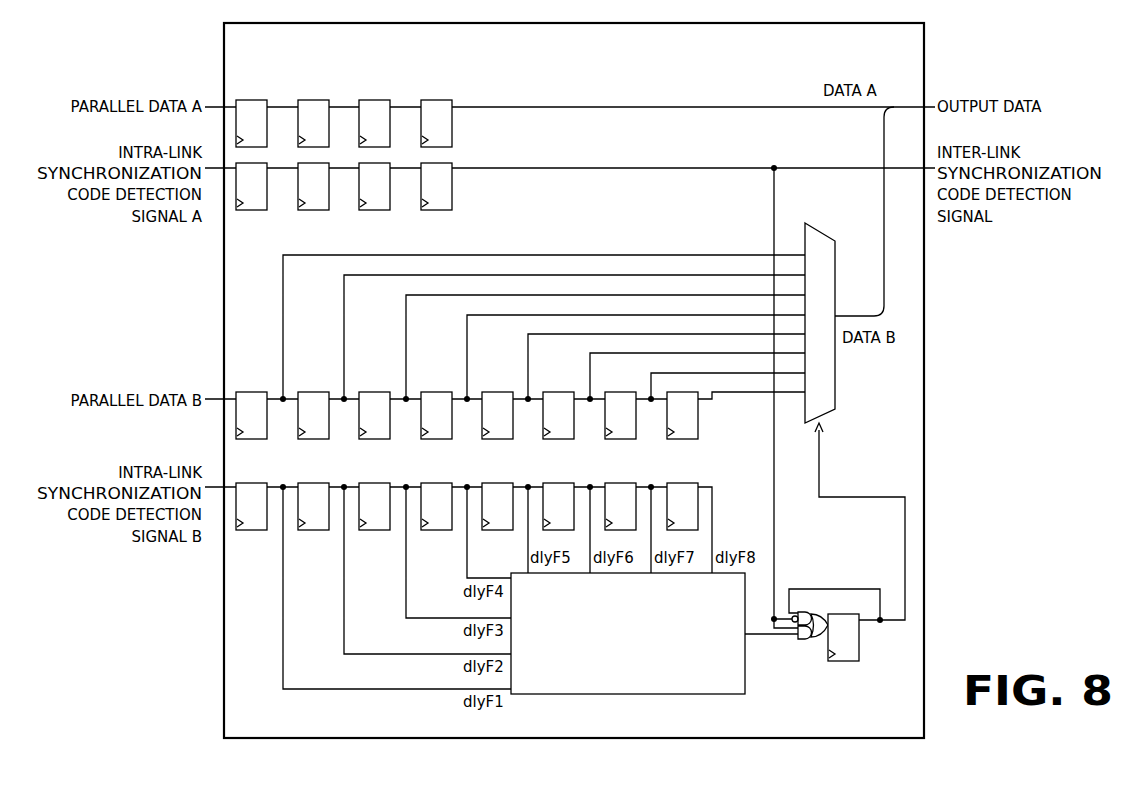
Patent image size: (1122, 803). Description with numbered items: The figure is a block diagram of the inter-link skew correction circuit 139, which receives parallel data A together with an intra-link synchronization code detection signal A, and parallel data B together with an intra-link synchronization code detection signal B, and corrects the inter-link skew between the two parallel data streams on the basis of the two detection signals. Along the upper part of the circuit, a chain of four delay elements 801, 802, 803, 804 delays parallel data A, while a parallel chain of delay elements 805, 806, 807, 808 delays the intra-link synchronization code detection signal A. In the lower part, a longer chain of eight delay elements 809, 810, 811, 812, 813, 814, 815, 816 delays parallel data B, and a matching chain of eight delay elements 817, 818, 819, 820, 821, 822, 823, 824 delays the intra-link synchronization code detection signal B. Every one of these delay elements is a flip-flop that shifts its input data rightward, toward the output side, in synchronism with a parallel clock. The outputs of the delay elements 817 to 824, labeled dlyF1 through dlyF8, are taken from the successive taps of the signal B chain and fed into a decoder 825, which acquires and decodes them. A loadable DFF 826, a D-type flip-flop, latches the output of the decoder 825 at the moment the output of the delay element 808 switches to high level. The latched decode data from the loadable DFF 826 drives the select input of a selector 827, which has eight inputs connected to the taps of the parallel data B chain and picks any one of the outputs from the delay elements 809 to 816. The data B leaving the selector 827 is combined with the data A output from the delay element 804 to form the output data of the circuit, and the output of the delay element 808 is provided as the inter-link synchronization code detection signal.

The inter-link skew correction circuit 139 is at (924, 445).
The delay element 801 is at (250, 100).
The delay element 802 is at (312, 100).
The delay element 803 is at (372, 100).
The delay element 804 is at (434, 100).
The delay element 805 is at (250, 210).
The delay element 806 is at (312, 210).
The delay element 807 is at (372, 210).
The delay element 808 is at (434, 210).
The delay element 809 is at (250, 392).
The delay element 810 is at (312, 392).
The delay element 811 is at (372, 392).
The delay element 812 is at (434, 392).
The delay element 813 is at (496, 392).
The delay element 814 is at (556, 392).
The delay element 815 is at (618, 392).
The delay element 816 is at (697, 417).
The delay element 817 is at (250, 483).
The delay element 818 is at (312, 483).
The delay element 819 is at (372, 483).
The delay element 820 is at (434, 483).
The delay element 821 is at (496, 483).
The delay element 822 is at (556, 483).
The delay element 823 is at (618, 483).
The delay element 824 is at (680, 483).
The decoder 825 is at (690, 694).
The loadable DFF 826 is at (842, 661).
The selector 827 is at (835, 240).